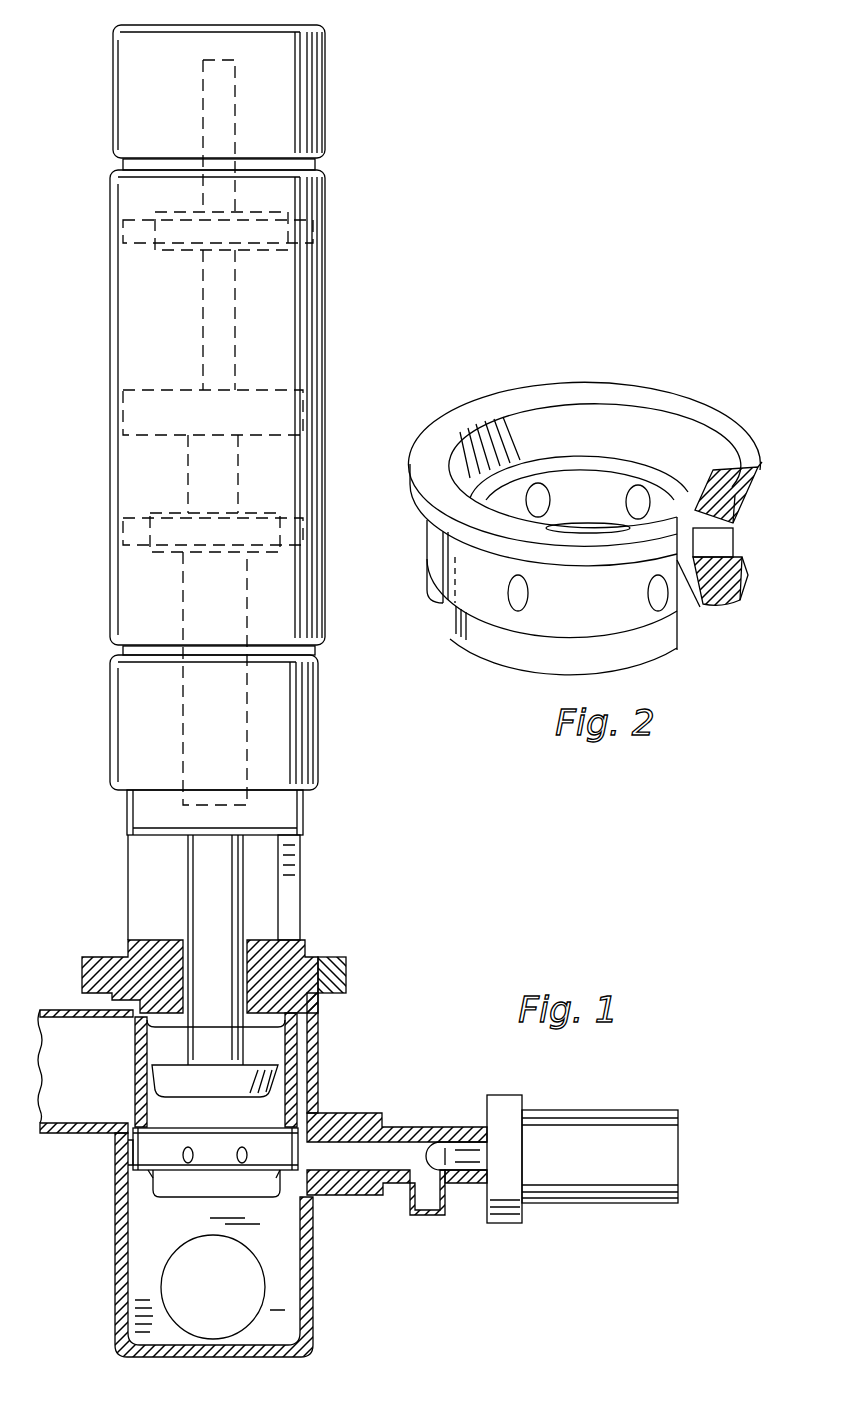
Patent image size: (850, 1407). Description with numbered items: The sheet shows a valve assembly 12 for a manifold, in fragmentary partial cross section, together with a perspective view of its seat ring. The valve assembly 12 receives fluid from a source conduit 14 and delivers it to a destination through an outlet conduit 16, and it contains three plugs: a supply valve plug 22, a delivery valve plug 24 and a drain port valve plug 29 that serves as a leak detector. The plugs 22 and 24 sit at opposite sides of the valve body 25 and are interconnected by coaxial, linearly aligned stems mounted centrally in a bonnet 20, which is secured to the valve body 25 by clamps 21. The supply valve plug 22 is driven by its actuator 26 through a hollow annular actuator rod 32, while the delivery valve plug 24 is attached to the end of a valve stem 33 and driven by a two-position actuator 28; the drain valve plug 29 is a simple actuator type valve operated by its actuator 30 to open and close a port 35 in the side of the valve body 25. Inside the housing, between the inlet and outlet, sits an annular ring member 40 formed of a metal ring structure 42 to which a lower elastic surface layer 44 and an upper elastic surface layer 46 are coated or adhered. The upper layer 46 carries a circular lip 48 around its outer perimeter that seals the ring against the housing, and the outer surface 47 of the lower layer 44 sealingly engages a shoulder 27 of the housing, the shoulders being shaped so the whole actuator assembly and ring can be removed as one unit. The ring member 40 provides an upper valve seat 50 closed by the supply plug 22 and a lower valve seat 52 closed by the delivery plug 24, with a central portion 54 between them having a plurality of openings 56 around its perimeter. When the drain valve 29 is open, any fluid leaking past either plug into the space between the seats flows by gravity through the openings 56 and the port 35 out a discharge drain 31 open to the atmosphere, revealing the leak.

In FIG. 1, the valve assembly 12 is at (447, 950).
In FIG. 1, the source conduit 14 is at (61, 1010).
In FIG. 1, the outlet conduit 16 is at (245, 1285).
In FIG. 1, the bonnet 20 is at (118, 950).
In FIG. 1, the clamps 21 is at (345, 978).
In FIG. 1, the supply valve plug 22 is at (265, 1080).
In FIG. 1, the delivery valve plug 24 is at (162, 1197).
In FIG. 1, the valve body 25 is at (118, 1148).
In FIG. 1, the actuator 26 is at (190, 588).
In FIG. 1, the shoulder 27 is at (148, 1175).
In FIG. 1, the actuator 28 is at (212, 300).
In FIG. 1, the drain port valve plug 29 is at (460, 1142).
In FIG. 1, the actuator 30 is at (637, 1118).
In FIG. 1, the discharge drain 31 is at (428, 1215).
In FIG. 1, the actuator rod 32 is at (190, 880).
In FIG. 1, the valve stem 33 is at (207, 1108).
In FIG. 1, the port 35 is at (352, 1128).
In FIG. 1, the annular ring member 40 is at (330, 1195).
In FIG. 2, the annular ring member 40 is at (537, 375).
In FIG. 2, the metal ring structure 42 is at (740, 510).
In FIG. 2, the lower elastic surface layer 44 is at (723, 600).
In FIG. 2, the upper elastic surface layer 46 is at (745, 470).
In FIG. 2, the outer surface 47 is at (742, 585).
In FIG. 2, the circular lip 48 is at (758, 482).
In FIG. 2, the upper valve seat 50 is at (652, 425).
In FIG. 2, the lower valve seat 52 is at (710, 585).
In FIG. 2, the central portion 54 is at (594, 480).
In FIG. 2, the openings 56 is at (545, 485).